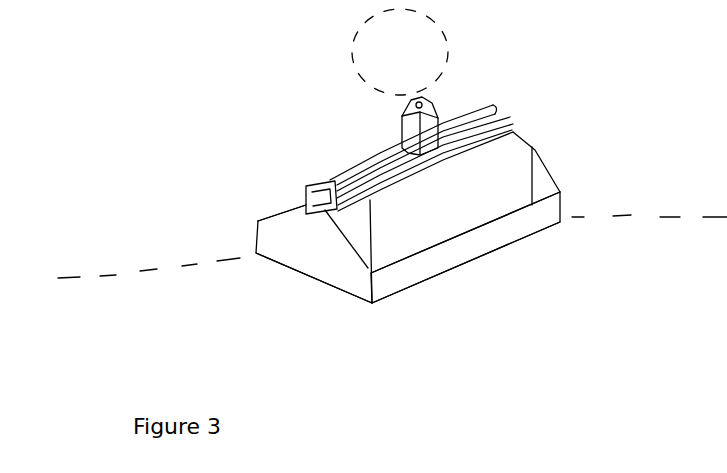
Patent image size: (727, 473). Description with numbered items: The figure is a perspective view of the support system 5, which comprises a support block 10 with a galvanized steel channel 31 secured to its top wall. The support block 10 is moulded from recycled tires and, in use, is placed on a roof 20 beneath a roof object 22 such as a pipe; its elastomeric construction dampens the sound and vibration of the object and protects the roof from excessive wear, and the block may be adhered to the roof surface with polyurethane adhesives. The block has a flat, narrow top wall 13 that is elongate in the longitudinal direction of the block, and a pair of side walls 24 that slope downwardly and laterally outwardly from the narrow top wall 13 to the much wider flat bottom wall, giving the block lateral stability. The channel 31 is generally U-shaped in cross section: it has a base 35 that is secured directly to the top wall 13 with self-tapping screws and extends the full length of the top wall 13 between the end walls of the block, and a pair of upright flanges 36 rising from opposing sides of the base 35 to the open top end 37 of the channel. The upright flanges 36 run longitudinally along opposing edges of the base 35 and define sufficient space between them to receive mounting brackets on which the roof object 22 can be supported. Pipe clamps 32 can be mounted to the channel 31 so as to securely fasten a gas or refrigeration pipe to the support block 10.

The support system 5 is at (294, 294).
The support block 10 is at (465, 207).
The top wall 13 is at (310, 205).
The roof 20 is at (101, 274).
The roof object 22 is at (355, 37).
The side walls 24 is at (414, 233).
The galvanized steel channel 31 is at (500, 123).
The pipe clamps 32 is at (423, 95).
The base 35 is at (327, 207).
The upright flanges 36 is at (343, 187).
The open top end 37 is at (371, 163).